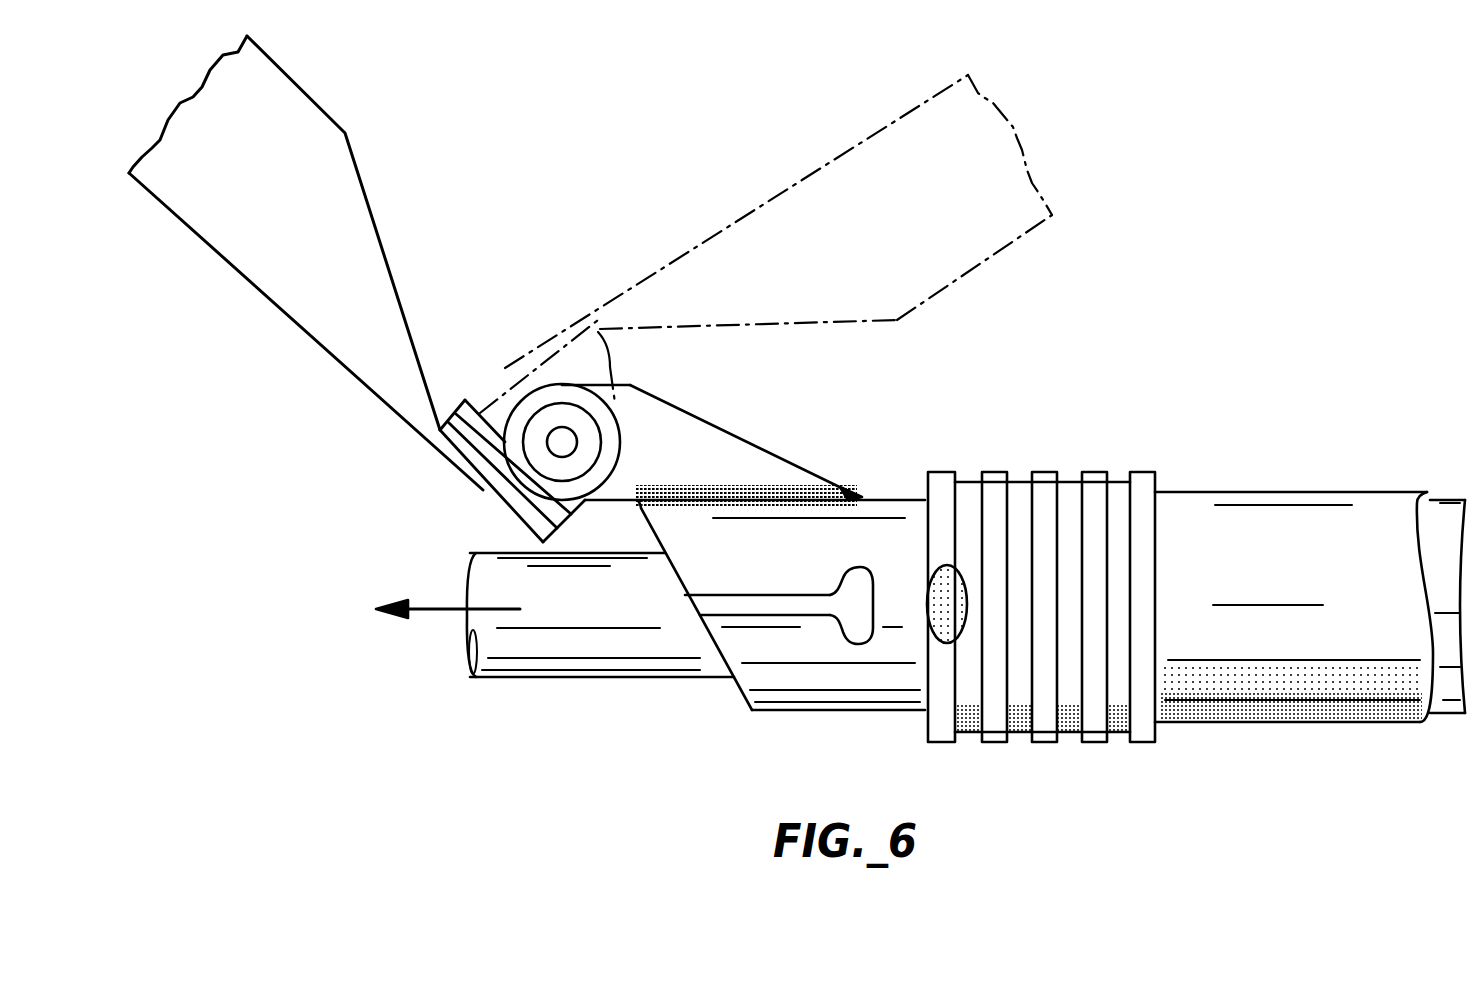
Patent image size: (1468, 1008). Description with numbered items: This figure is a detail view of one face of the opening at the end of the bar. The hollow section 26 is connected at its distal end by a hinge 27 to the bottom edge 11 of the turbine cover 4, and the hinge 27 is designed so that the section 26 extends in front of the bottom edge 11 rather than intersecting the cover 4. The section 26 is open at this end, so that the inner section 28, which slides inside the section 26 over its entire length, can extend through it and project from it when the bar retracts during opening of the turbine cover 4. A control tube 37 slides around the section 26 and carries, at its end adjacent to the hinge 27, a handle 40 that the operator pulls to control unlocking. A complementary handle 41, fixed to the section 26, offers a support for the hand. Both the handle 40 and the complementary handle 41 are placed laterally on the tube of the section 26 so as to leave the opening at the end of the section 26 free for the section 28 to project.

The turbine cover 4 is at (317, 322).
The bottom edge 11 is at (483, 490).
The hinge 27 is at (670, 392).
The section 26 is at (893, 523).
The section 28 is at (582, 647).
The complementary handle 41 is at (850, 627).
The handle 40 is at (928, 625).
The control tube 37 is at (1183, 540).